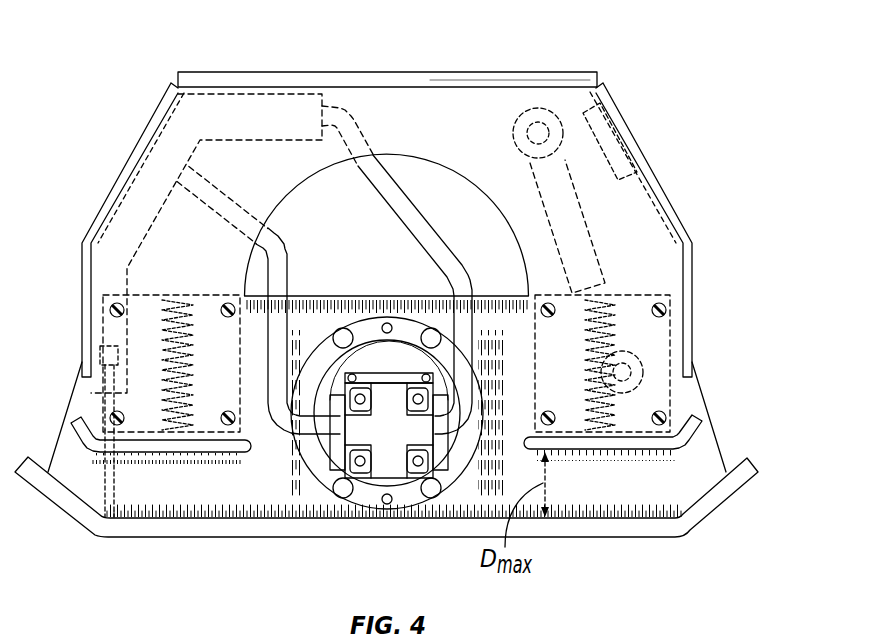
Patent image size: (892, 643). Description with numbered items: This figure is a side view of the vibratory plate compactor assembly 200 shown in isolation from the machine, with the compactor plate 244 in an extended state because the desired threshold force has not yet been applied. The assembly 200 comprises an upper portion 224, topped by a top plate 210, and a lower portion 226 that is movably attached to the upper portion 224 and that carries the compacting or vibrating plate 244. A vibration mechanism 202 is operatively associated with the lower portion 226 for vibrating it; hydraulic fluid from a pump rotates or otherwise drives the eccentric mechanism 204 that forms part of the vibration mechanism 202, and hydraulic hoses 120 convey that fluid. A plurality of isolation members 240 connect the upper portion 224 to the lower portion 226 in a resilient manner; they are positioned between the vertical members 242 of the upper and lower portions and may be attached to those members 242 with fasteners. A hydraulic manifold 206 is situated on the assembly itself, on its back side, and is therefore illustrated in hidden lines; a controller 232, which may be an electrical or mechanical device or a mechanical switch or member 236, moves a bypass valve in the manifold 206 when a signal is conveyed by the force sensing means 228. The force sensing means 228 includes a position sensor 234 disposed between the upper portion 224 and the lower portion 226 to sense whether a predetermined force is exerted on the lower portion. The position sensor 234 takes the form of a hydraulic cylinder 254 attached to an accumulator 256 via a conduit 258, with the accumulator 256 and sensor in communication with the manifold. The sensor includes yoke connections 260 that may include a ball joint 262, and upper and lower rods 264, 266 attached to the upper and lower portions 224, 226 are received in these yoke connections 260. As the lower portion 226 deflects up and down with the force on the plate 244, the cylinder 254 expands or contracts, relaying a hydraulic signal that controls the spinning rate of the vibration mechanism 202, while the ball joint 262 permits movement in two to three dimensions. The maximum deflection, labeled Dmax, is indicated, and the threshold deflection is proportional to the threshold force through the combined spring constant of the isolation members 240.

The vibratory plate compactor assembly 200 is at (411, 315).
The hydraulic manifold 206 is at (130, 210).
The top plate 210 is at (455, 73).
The upper portion 224 is at (688, 212).
The lower portion 226 is at (725, 440).
The compactor plate 244 is at (638, 528).
The isolation members 240 is at (659, 293).
The vertical members 242 is at (673, 407).
The controller 232 is at (112, 345).
The mechanical switch or member 236 is at (113, 502).
The hydraulic hoses 120 is at (288, 253).
The vibration mechanism 202 is at (387, 450).
The eccentric mechanism 204 is at (417, 512).
The force sensing means 228 is at (498, 205).
The position sensor 234 is at (537, 200).
The hydraulic cylinder 254 is at (558, 164).
The conduit 258 is at (502, 164).
The accumulator 256 is at (623, 153).
The yoke connections 260 is at (480, 80).
The ball joint 262 is at (480, 80).
The upper rod 264 is at (526, 129).
The lower rod 266 is at (622, 372).